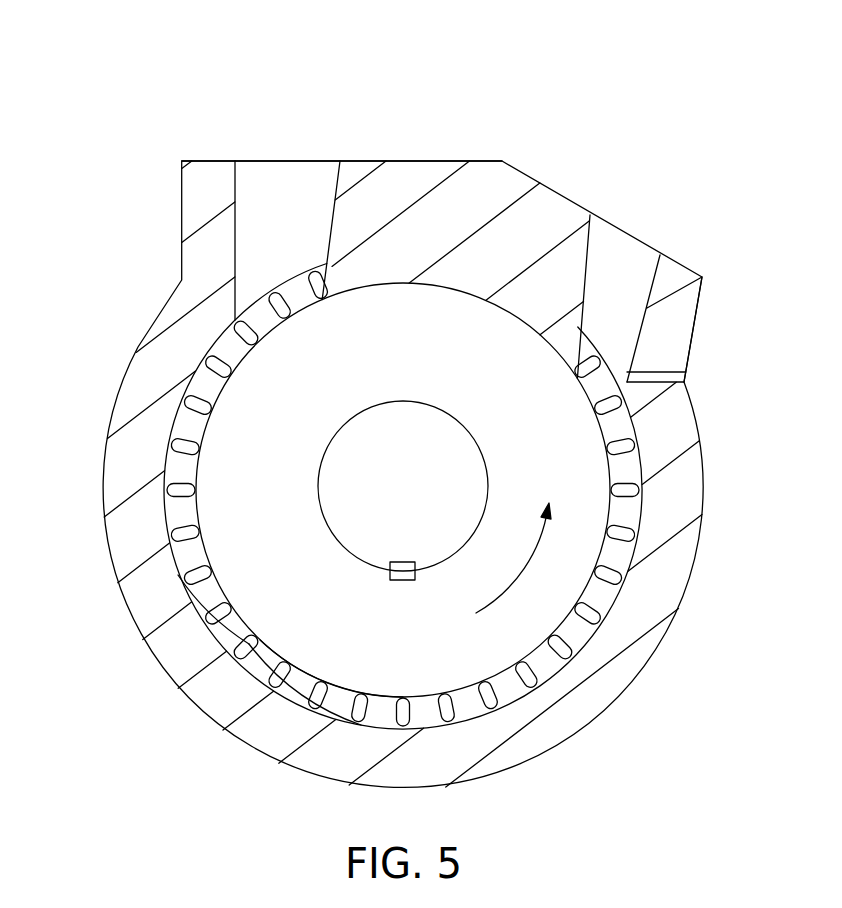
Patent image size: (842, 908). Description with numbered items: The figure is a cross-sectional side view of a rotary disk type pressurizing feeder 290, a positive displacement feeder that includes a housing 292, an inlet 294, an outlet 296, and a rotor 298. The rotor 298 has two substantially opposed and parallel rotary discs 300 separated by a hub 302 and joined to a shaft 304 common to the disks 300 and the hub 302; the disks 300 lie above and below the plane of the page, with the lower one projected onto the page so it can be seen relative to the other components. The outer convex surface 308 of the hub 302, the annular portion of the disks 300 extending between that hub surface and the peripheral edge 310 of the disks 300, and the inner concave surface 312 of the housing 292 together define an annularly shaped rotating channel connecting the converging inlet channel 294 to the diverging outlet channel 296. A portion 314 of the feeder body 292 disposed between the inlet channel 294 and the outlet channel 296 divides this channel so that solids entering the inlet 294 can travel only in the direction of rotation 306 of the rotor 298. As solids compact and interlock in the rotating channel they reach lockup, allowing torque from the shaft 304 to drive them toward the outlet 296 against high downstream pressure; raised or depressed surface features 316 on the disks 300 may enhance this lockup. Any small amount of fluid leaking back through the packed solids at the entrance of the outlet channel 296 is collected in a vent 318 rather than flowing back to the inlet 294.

The rotary disk type pressurizing feeder 290 is at (159, 85).
The housing 292 is at (484, 186).
The inlet 294 is at (270, 170).
The outlet 296 is at (620, 242).
The rotor 298 is at (173, 556).
The rotary discs 300 is at (207, 595).
The hub 302 is at (263, 437).
The shaft 304 is at (382, 418).
The direction of rotation 306 is at (521, 569).
The outer convex surface of the hub 308 is at (260, 628).
The peripheral edge of the disks 310 is at (233, 647).
The inner concave surface of the feeder housing 312 is at (277, 693).
The portion of the feeder body 314 is at (411, 172).
The surface features 316 is at (563, 643).
The vent 318 is at (680, 379).